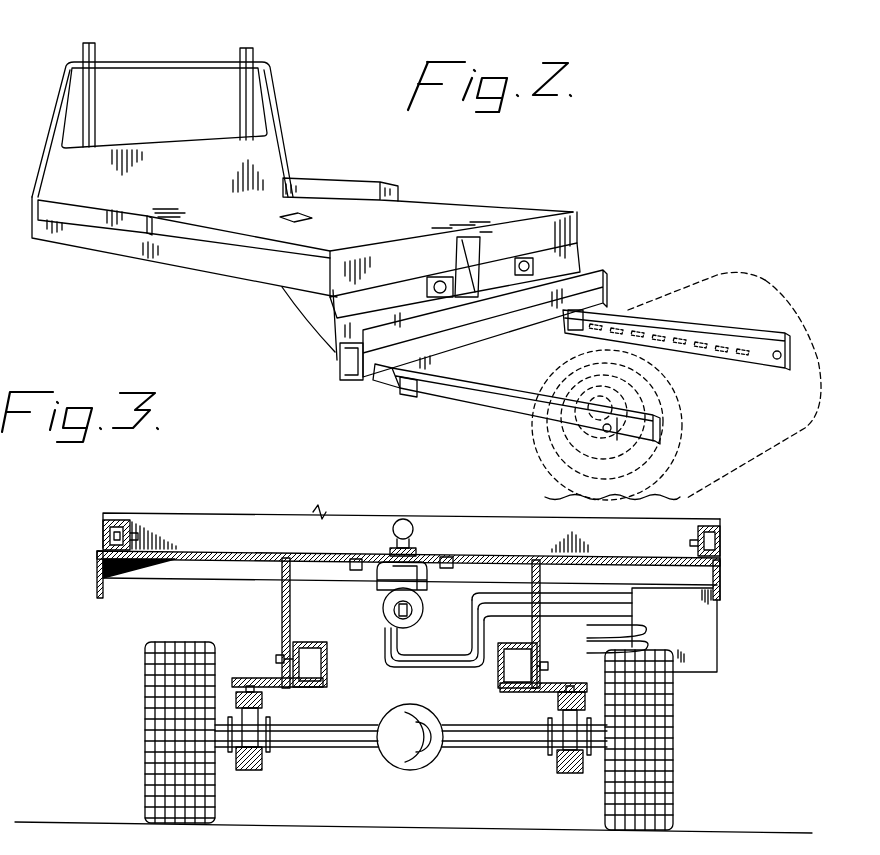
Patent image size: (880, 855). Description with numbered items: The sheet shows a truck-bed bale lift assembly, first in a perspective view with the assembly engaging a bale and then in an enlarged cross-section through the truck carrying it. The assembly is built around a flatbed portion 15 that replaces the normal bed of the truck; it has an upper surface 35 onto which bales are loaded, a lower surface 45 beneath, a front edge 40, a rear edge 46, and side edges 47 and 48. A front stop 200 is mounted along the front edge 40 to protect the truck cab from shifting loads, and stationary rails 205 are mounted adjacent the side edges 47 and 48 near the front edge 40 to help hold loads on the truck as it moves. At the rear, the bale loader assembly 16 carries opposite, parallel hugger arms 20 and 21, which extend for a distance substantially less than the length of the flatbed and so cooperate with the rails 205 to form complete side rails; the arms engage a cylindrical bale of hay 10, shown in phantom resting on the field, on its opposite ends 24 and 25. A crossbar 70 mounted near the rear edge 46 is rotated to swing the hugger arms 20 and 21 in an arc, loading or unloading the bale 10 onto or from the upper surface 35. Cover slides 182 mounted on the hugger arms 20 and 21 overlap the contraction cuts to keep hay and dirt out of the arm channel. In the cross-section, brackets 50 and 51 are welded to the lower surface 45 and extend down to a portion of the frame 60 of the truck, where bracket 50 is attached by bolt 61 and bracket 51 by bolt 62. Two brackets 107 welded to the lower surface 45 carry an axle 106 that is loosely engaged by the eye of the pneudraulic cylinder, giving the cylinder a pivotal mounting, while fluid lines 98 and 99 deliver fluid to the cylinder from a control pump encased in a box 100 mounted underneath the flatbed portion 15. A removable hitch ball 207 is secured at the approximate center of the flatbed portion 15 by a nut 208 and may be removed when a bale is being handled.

In FIG. 2, the front stop 200 is at (67, 62).
In FIG. 2, the rails 205 is at (72, 200).
In FIG. 2, the front edge 40 is at (202, 198).
In FIG. 2, the flatbed portion 15 is at (480, 210).
In FIG. 2, the side edge 48 is at (423, 198).
In FIG. 3, the side edge 48 is at (723, 563).
In FIG. 2, the rear edge 46 is at (578, 222).
In FIG. 2, the bale loader assembly 16 is at (593, 270).
In FIG. 2, the side edge 47 is at (225, 250).
In FIG. 3, the side edge 47 is at (96, 568).
In FIG. 2, the crossbar 70 is at (483, 330).
In FIG. 2, the cover slides 182 is at (568, 320).
In FIG. 2, the hugger arm 20 is at (477, 403).
In FIG. 2, the hugger arm 21 is at (613, 307).
In FIG. 2, the bale of hay 10 is at (717, 272).
In FIG. 2, the end of bale 25 is at (787, 295).
In FIG. 2, the end of bale 24 is at (553, 465).
In FIG. 3, the upper surface 35 is at (217, 552).
In FIG. 3, the lower surface 45 is at (247, 562).
In FIG. 3, the box 100 is at (713, 637).
In FIG. 3, the bracket 50 is at (290, 600).
In FIG. 3, the bracket 51 is at (543, 575).
In FIG. 3, the hitch ball 207 is at (392, 520).
In FIG. 3, the nut 208 is at (412, 555).
In FIG. 3, the brackets 107 is at (357, 566).
In FIG. 3, the axle 106 is at (380, 578).
In FIG. 3, the fluid line 98 is at (467, 595).
In FIG. 3, the fluid line 99 is at (408, 664).
In FIG. 3, the frame 60 is at (328, 655).
In FIG. 3, the bolt 61 is at (284, 651).
In FIG. 3, the bolt 62 is at (543, 667).